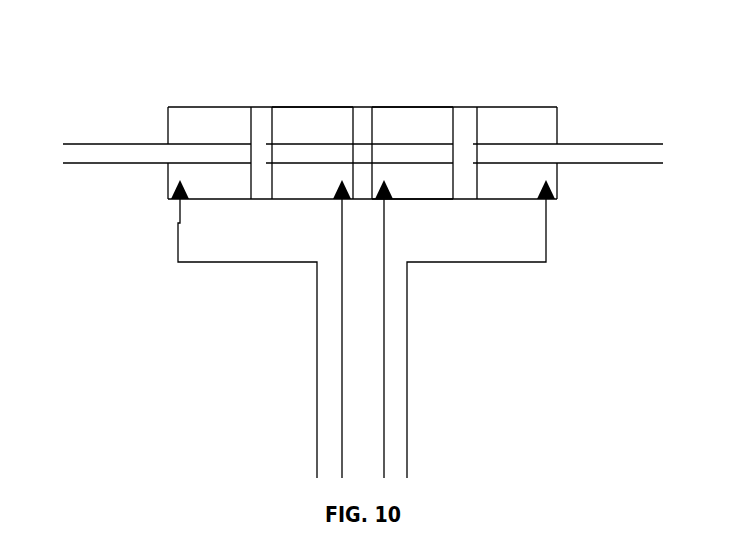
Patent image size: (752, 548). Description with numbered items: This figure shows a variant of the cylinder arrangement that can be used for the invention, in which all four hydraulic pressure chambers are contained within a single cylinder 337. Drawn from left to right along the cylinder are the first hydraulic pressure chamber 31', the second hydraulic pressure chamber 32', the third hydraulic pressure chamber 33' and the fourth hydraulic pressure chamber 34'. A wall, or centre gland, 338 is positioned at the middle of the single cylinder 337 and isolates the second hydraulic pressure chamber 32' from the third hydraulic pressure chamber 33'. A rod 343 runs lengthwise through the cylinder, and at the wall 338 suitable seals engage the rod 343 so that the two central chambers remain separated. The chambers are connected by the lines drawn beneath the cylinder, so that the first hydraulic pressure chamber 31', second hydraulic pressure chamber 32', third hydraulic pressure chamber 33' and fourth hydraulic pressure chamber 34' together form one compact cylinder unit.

The first hydraulic pressure chamber 31' is at (148, 140).
The second hydraulic pressure chamber 32' is at (271, 129).
The single cylinder 337 is at (320, 105).
The wall (centre gland) 338 is at (365, 125).
The third hydraulic pressure chamber 33' is at (448, 123).
The rod 343 is at (430, 158).
The fourth hydraulic pressure chamber 34' is at (586, 140).